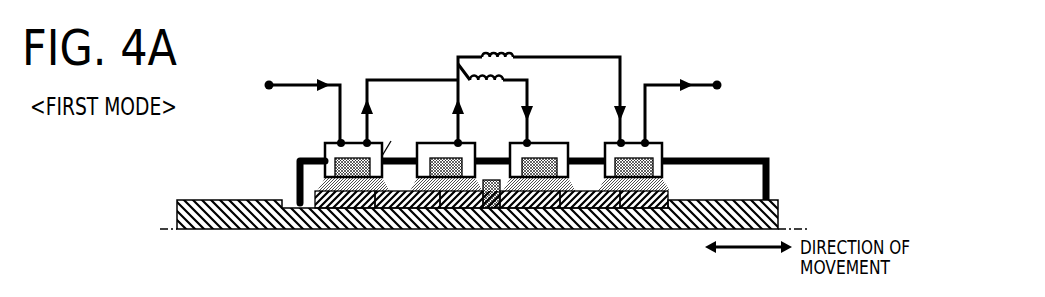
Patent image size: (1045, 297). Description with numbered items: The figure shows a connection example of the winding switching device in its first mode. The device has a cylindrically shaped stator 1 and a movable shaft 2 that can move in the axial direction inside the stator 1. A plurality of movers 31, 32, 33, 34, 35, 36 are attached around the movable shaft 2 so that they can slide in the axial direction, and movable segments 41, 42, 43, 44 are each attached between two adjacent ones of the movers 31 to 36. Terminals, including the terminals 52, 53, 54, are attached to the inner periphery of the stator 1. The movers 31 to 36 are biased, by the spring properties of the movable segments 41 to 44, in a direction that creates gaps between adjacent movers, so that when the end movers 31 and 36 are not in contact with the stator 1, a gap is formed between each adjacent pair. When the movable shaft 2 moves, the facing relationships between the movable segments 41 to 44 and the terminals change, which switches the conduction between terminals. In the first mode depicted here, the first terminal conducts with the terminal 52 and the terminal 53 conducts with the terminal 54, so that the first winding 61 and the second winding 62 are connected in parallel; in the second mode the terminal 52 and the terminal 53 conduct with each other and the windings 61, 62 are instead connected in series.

The stator 1 is at (771, 158).
The movable shaft 2 is at (779, 203).
The mover 31 is at (327, 214).
The mover 32 is at (395, 216).
The mover 33 is at (466, 212).
The mover 34 is at (521, 212).
The mover 35 is at (591, 212).
The mover 36 is at (647, 212).
The movable segment 41 is at (330, 143).
The movable segment 42 is at (421, 158).
The movable segment 43 is at (520, 143).
The movable segment 44 is at (620, 134).
The terminal 52 is at (477, 157).
The terminal 53 is at (572, 151).
The terminal 54 is at (670, 155).
The first winding 61 is at (457, 63).
The second winding 62 is at (504, 53).